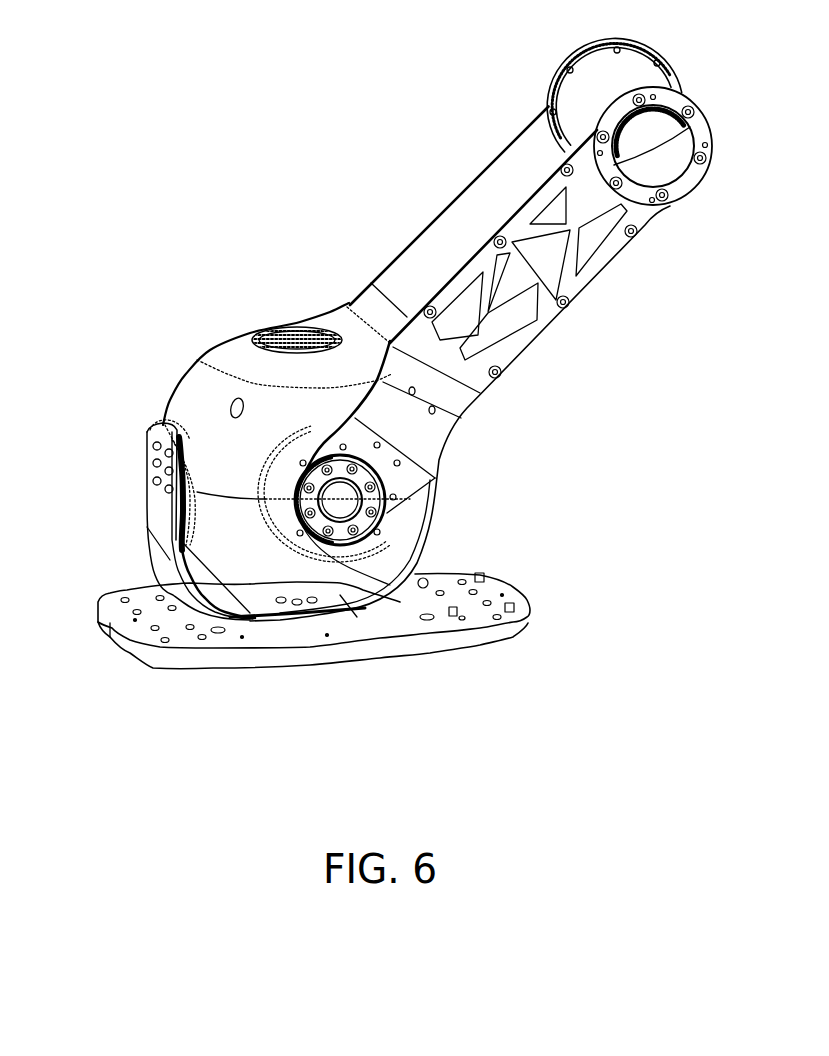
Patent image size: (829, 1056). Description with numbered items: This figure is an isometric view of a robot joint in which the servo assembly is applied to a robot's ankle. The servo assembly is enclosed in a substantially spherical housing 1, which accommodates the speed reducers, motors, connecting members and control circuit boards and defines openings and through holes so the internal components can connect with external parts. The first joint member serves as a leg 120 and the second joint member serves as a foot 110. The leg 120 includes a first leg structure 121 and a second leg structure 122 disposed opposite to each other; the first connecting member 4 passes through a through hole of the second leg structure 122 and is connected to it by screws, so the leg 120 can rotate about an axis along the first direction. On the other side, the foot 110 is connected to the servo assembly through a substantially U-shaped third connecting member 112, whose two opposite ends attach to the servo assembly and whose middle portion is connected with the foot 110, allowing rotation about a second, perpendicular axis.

The housing 1 is at (212, 355).
The first connecting member 4 is at (387, 515).
The foot 110 is at (395, 645).
The third connecting member 112 is at (150, 513).
The leg 120 is at (489, 324).
The first leg structure 121 is at (551, 100).
The second leg structure 122 is at (651, 221).